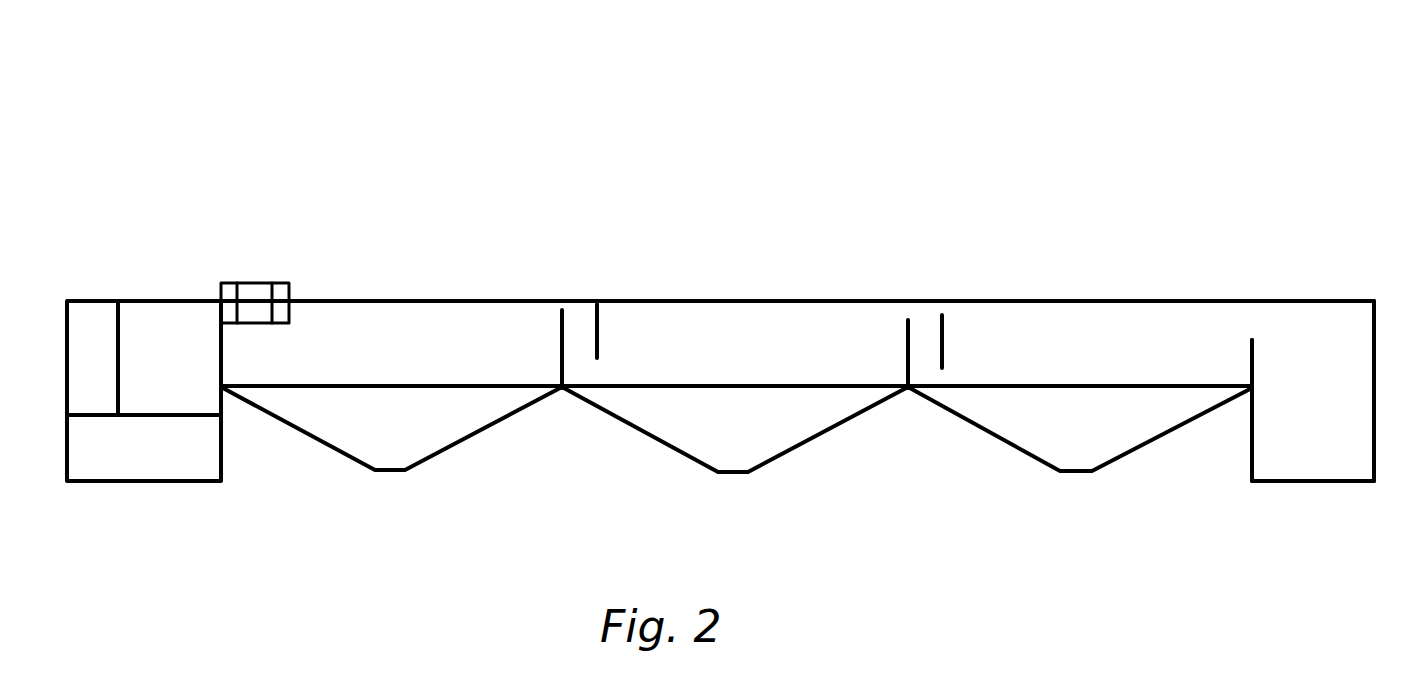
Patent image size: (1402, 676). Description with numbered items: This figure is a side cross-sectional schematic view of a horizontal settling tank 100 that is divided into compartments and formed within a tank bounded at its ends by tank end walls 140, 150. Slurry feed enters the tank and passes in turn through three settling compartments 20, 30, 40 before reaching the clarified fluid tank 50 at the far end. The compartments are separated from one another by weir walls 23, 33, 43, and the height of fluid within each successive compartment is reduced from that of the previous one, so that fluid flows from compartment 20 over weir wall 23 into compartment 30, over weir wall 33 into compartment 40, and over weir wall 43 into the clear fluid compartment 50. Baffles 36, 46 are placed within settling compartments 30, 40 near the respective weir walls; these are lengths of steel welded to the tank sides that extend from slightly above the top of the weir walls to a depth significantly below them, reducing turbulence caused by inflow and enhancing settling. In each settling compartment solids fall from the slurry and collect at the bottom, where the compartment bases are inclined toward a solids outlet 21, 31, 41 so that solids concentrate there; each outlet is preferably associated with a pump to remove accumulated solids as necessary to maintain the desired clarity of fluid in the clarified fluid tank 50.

The horizontal settling tank 100 is at (1093, 122).
The tank end wall 140 is at (288, 283).
The settling compartment 20 is at (423, 310).
The solids outlet 21 is at (395, 472).
The weir wall 23 is at (554, 398).
The baffle 36 is at (600, 330).
The settling compartment 30 is at (752, 330).
The solids outlet 31 is at (738, 473).
The weir wall 33 is at (905, 370).
The baffle 46 is at (945, 338).
The settling compartment 40 is at (1090, 305).
The solids outlet 41 is at (1082, 472).
The weir wall 43 is at (1251, 358).
The clarified fluid tank 50 is at (1300, 340).
The tank end wall 150 is at (1376, 445).